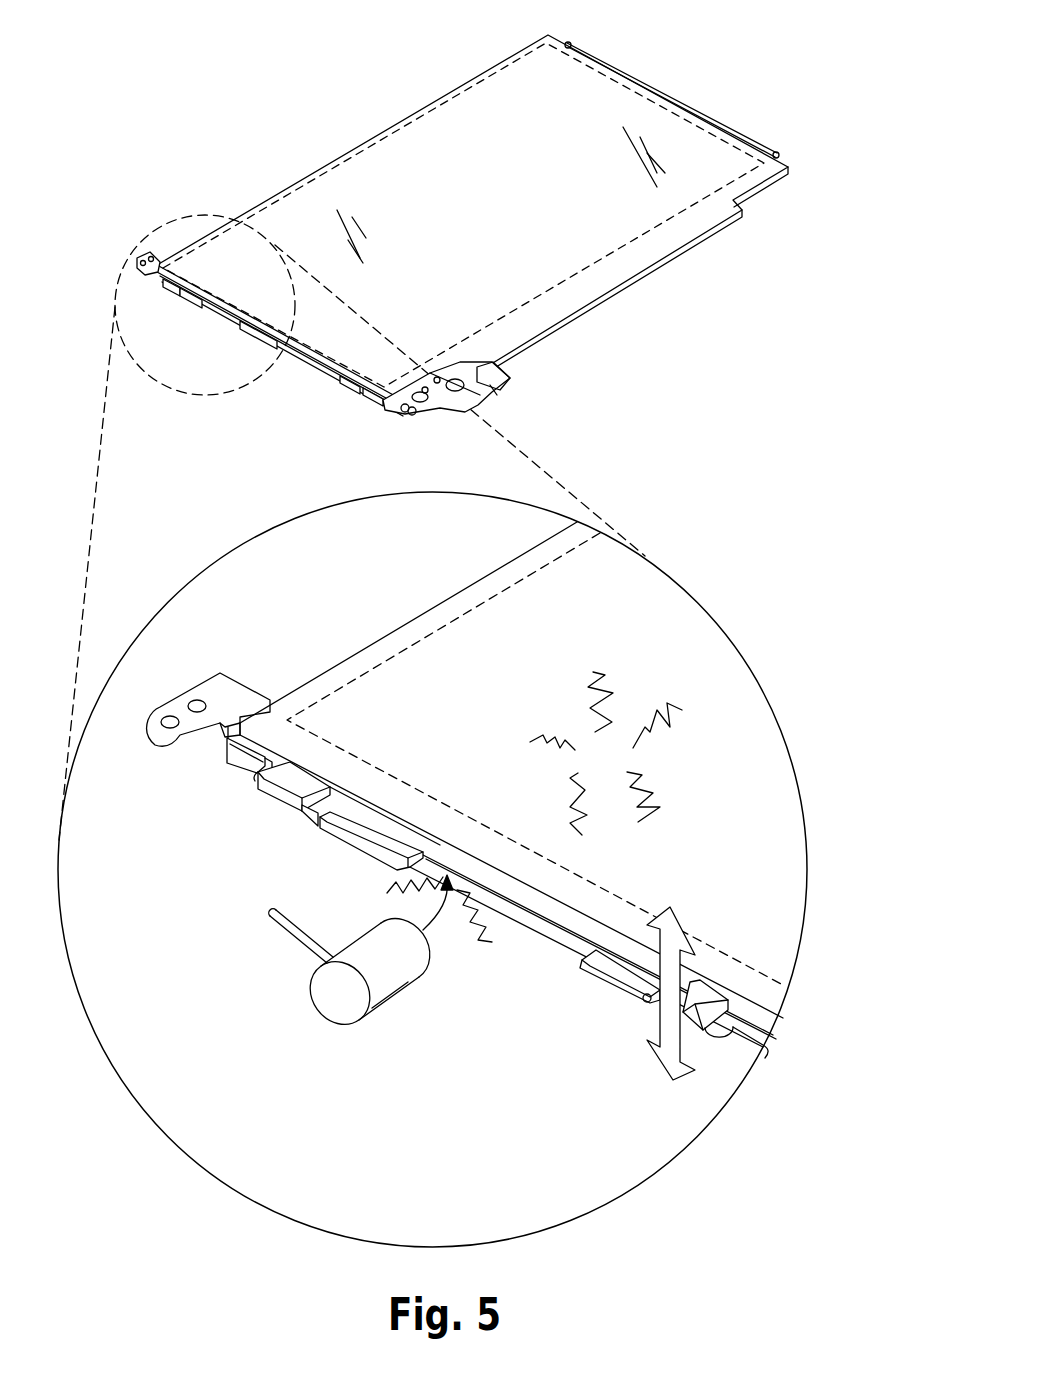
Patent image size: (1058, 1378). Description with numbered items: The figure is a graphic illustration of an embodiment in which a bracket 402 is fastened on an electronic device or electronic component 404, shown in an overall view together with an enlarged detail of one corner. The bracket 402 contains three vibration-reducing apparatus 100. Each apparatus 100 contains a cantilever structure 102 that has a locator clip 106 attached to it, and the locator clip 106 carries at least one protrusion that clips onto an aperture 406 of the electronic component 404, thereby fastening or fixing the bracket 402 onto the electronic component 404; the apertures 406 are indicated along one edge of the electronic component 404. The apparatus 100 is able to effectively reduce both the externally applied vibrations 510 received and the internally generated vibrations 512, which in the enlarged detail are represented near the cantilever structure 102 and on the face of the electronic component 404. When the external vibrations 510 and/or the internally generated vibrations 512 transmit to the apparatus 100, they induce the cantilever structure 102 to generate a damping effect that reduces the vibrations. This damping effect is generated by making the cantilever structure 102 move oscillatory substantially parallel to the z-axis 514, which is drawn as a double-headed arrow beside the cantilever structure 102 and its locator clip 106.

The apparatus 100 is at (348, 396).
The cantilever structure 102 is at (723, 1033).
The locator clip 106 is at (692, 1003).
The bracket 402 is at (532, 372).
The electronic component 404 is at (490, 208).
The aperture 406 is at (570, 44).
The external vibrations 510 is at (337, 1005).
The internally generated vibrations 512 is at (606, 753).
The z-axis 514 is at (647, 993).